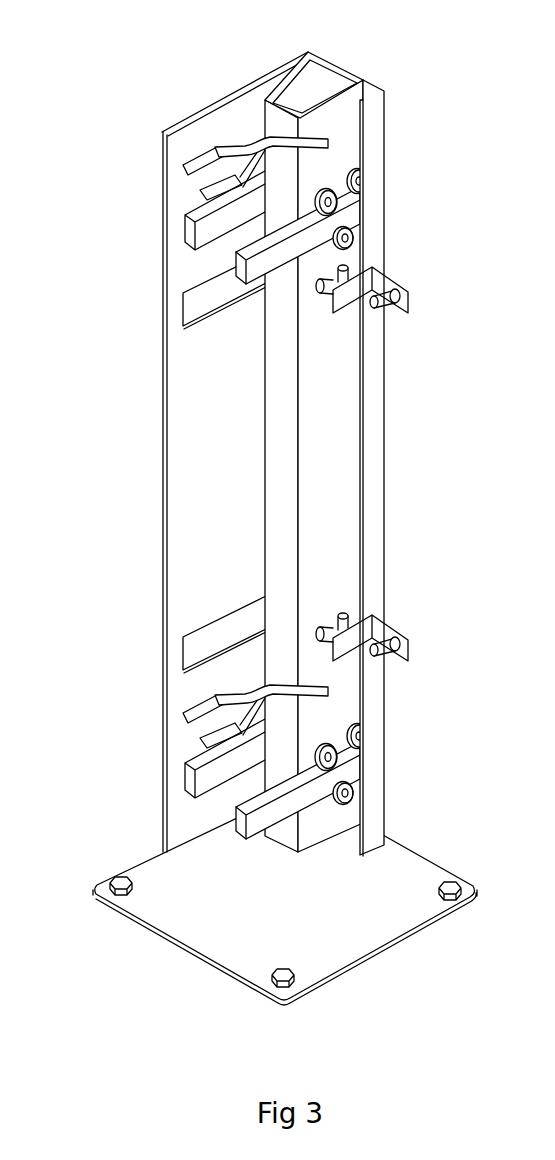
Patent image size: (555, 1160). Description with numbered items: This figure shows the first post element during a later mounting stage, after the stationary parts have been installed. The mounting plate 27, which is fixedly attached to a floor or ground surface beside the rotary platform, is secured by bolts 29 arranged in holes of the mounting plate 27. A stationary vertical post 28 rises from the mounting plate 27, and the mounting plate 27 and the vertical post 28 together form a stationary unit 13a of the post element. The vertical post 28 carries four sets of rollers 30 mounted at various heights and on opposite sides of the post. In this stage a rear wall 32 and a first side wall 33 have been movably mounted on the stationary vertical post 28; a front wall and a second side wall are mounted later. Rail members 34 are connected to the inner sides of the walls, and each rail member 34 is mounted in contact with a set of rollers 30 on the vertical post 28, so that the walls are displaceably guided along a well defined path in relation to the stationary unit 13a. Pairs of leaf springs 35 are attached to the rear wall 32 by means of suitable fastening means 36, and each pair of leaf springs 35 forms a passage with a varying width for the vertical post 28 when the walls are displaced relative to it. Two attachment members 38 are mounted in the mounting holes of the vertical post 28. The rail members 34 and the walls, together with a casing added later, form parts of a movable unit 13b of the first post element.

The stationary unit 13a is at (330, 390).
The movable unit 13b is at (195, 408).
The mounting plate 27 is at (345, 932).
The vertical post 28 is at (340, 473).
The bolts 29 is at (112, 878).
The rollers 30 is at (352, 176).
The rear wall 32 is at (220, 103).
The first side wall 33 is at (367, 80).
The rail members 34 is at (347, 217).
The leaf springs 35 is at (262, 147).
The fastening means 36 is at (207, 188).
The attachment members 38 is at (385, 282).